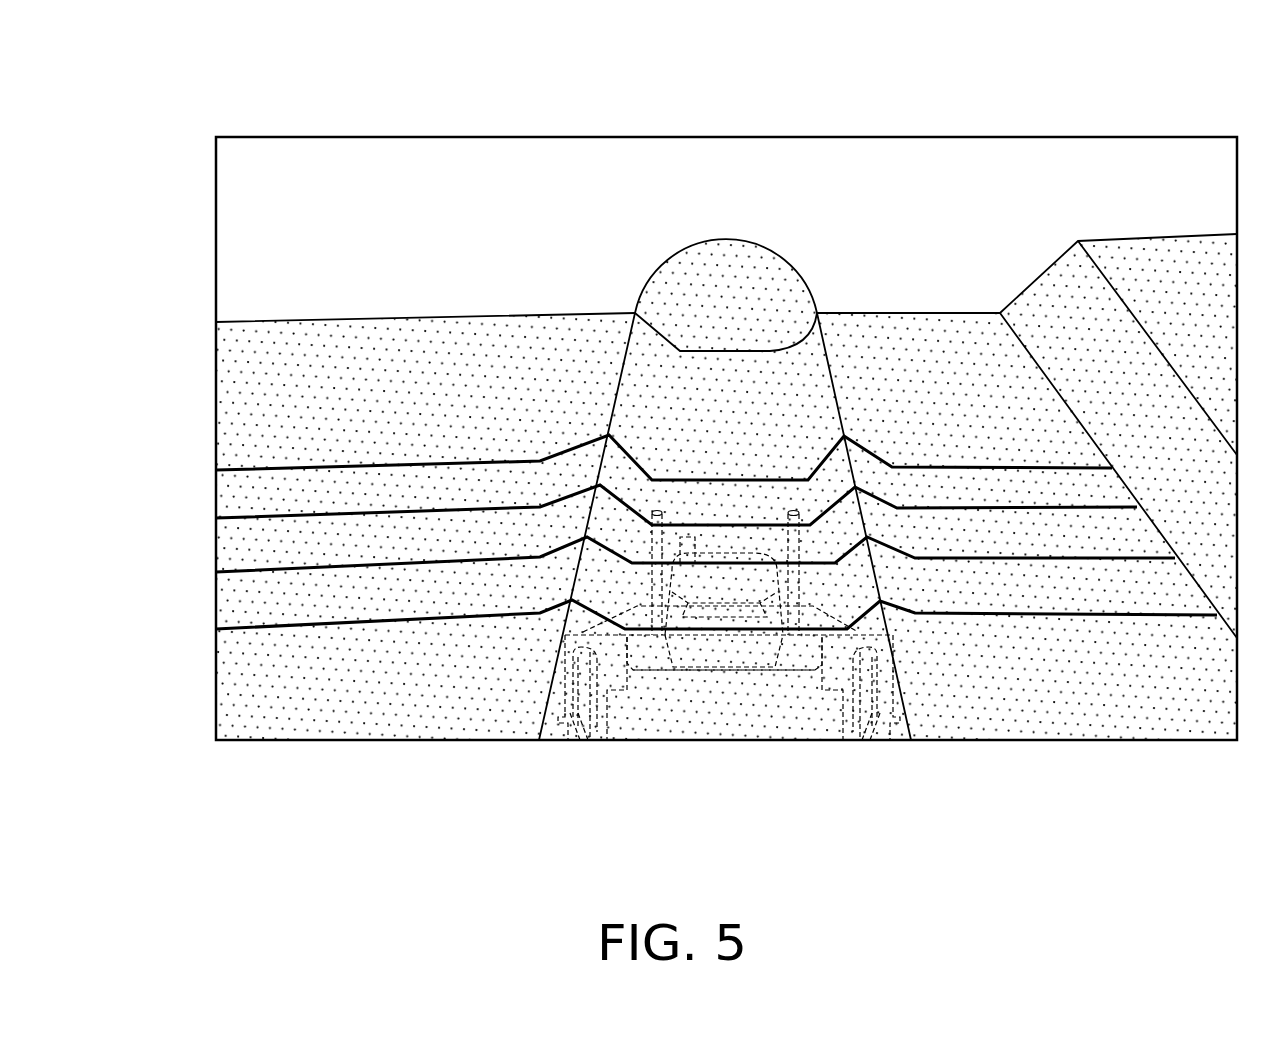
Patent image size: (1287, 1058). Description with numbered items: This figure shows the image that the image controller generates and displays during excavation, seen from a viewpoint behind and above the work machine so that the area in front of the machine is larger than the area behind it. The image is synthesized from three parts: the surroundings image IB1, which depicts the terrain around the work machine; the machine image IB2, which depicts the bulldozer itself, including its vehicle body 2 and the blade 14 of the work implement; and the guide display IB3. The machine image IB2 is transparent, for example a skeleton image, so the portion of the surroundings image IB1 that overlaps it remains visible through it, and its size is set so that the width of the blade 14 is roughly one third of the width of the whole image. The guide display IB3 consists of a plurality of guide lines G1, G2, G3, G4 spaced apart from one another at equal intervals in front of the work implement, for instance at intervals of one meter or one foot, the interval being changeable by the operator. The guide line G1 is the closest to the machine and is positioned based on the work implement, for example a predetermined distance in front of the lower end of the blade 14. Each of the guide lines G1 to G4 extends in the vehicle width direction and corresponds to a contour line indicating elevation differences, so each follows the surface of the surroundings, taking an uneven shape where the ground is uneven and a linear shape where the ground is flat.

The surroundings image IB1 is at (527, 242).
The machine image IB2 is at (711, 727).
The guide display IB3 is at (903, 432).
The guide line G1 is at (265, 625).
The guide line G2 is at (263, 570).
The guide line G3 is at (260, 516).
The guide line G4 is at (258, 468).
The blade 14 is at (641, 692).
The vehicle body 2 is at (761, 713).